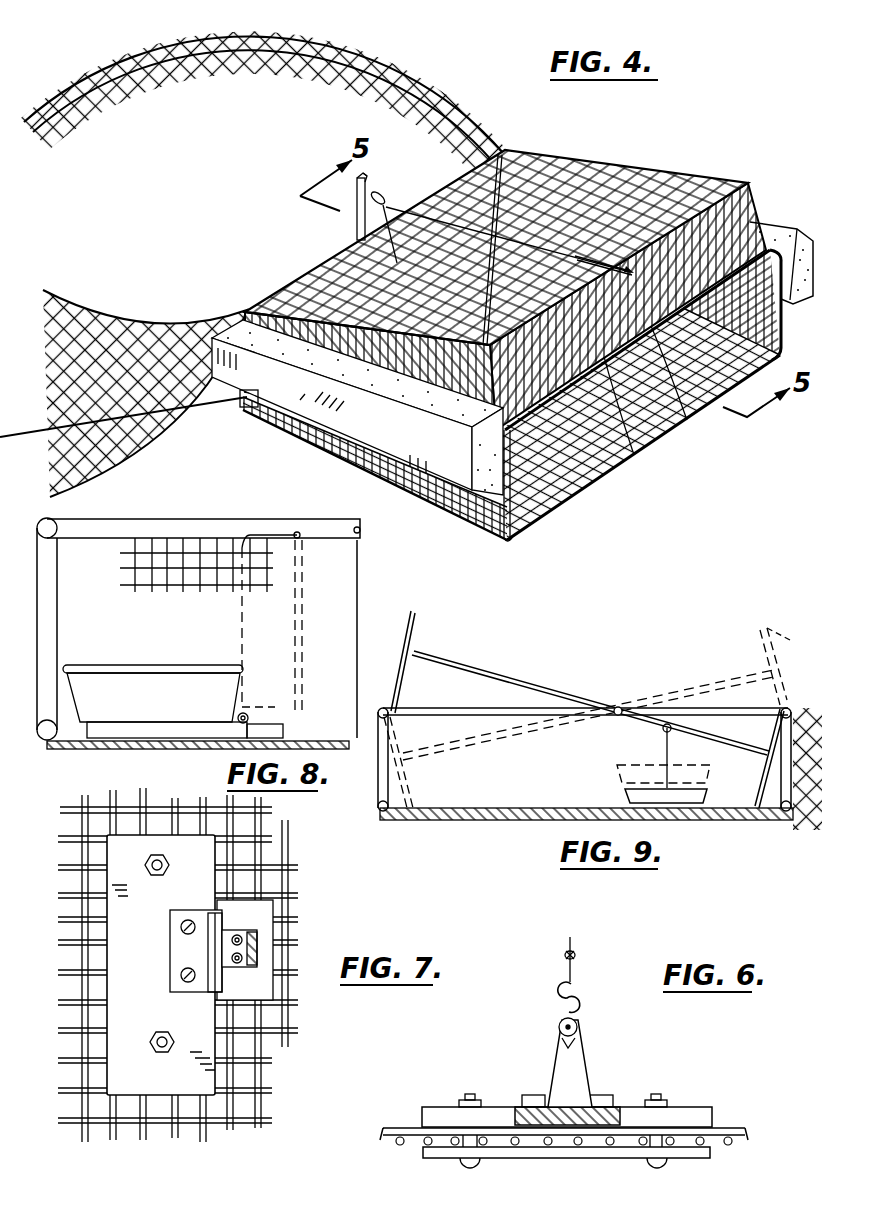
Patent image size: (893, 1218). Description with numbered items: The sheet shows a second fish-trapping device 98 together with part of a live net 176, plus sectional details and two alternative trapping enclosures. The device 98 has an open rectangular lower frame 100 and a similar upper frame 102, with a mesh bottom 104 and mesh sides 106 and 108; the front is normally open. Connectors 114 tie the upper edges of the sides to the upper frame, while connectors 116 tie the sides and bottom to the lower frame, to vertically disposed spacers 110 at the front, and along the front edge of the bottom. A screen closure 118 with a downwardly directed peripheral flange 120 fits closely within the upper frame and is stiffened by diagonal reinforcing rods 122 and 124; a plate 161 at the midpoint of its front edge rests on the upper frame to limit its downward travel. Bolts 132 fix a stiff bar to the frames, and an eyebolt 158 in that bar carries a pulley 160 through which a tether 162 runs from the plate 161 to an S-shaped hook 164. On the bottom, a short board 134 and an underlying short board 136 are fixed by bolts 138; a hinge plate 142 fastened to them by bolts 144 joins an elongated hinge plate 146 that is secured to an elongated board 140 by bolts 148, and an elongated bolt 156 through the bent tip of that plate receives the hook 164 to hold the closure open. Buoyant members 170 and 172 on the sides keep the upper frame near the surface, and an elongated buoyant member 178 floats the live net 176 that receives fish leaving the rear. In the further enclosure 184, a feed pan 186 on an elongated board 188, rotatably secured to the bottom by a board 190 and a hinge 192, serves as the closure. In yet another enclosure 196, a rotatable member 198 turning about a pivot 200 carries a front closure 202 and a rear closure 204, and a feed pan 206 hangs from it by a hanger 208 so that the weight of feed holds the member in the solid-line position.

In FIG. 4, the fish-trapping device 98 is at (505, 266).
In FIG. 4, the lower frame 100 is at (503, 543).
In FIG. 4, the upper frame 102 is at (627, 462).
In FIG. 4, the bottom 104 is at (601, 465).
In FIG. 7, the bottom 104 is at (147, 1140).
In FIG. 6, the bottom 104 is at (383, 1135).
In FIG. 4, the side 106 is at (448, 518).
In FIG. 4, the side 108 is at (765, 330).
In FIG. 4, the spacers 110 is at (783, 318).
In FIG. 4, the connectors 114 is at (312, 417).
In FIG. 4, the connectors 116 is at (400, 497).
In FIG. 4, the closure 118 is at (683, 173).
In FIG. 4, the peripheral flange 120 is at (748, 203).
In FIG. 4, the reinforcing rod 122 is at (500, 157).
In FIG. 4, the reinforcing rod 124 is at (287, 300).
In FIG. 4, the bolts 132 is at (357, 220).
In FIG. 7, the short board 134 is at (125, 1082).
In FIG. 6, the short board 134 is at (435, 1110).
In FIG. 7, the short board 136 is at (103, 822).
In FIG. 6, the short board 136 is at (440, 1155).
In FIG. 7, the bolts 138 is at (157, 877).
In FIG. 6, the bolts 138 is at (468, 1095).
In FIG. 7, the elongated board 140 is at (273, 988).
In FIG. 6, the elongated board 140 is at (515, 1105).
In FIG. 7, the hinge plate 142 is at (176, 957).
In FIG. 7, the bolts 144 is at (181, 928).
In FIG. 7, the elongated hinge plate 146 is at (257, 943).
In FIG. 6, the elongated hinge plate 146 is at (580, 1065).
In FIG. 7, the bolts 148 is at (247, 930).
In FIG. 6, the elongated bolt 156 is at (580, 1020).
In FIG. 4, the eyebolt 158 is at (370, 178).
In FIG. 4, the pulley 160 is at (378, 193).
In FIG. 4, the plate 161 is at (673, 427).
In FIG. 4, the tether 162 is at (400, 205).
In FIG. 6, the tether 162 is at (575, 940).
In FIG. 6, the S-shaped hook 164 is at (580, 992).
In FIG. 4, the buoyant member 170 is at (296, 435).
In FIG. 4, the buoyant member 172 is at (786, 224).
In FIG. 4, the live net 176 is at (345, 53).
In FIG. 4, the elongated buoyant member 178 is at (380, 76).
In FIG. 8, the enclosure 184 is at (223, 510).
In FIG. 8, the feed pan 186 is at (240, 625).
In FIG. 8, the elongated board 188 is at (117, 736).
In FIG. 8, the board 190 is at (284, 734).
In FIG. 8, the hinge 192 is at (268, 712).
In FIG. 9, the enclosure 196 is at (493, 818).
In FIG. 9, the rotatable member 198 is at (517, 727).
In FIG. 9, the pivot 200 is at (620, 707).
In FIG. 9, the closure 202 is at (407, 747).
In FIG. 9, the closure 204 is at (772, 700).
In FIG. 9, the feed pan 206 is at (628, 800).
In FIG. 9, the hanger 208 is at (663, 733).